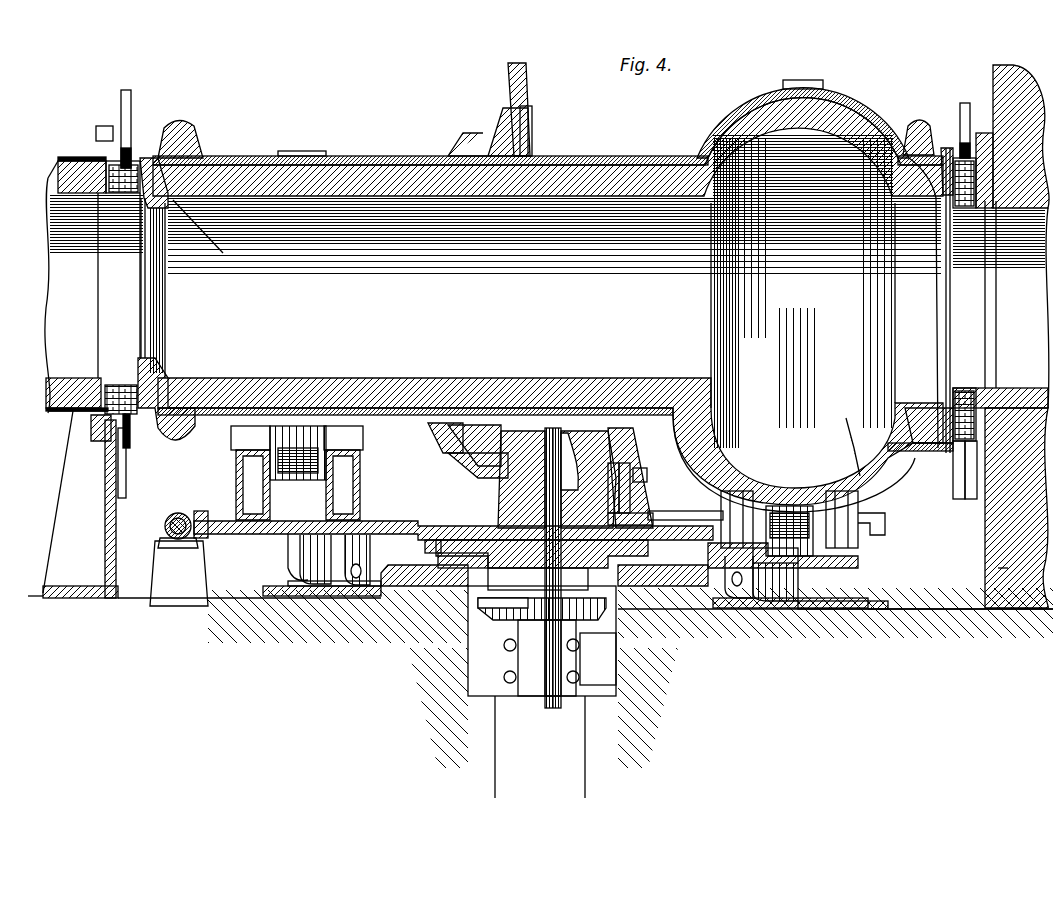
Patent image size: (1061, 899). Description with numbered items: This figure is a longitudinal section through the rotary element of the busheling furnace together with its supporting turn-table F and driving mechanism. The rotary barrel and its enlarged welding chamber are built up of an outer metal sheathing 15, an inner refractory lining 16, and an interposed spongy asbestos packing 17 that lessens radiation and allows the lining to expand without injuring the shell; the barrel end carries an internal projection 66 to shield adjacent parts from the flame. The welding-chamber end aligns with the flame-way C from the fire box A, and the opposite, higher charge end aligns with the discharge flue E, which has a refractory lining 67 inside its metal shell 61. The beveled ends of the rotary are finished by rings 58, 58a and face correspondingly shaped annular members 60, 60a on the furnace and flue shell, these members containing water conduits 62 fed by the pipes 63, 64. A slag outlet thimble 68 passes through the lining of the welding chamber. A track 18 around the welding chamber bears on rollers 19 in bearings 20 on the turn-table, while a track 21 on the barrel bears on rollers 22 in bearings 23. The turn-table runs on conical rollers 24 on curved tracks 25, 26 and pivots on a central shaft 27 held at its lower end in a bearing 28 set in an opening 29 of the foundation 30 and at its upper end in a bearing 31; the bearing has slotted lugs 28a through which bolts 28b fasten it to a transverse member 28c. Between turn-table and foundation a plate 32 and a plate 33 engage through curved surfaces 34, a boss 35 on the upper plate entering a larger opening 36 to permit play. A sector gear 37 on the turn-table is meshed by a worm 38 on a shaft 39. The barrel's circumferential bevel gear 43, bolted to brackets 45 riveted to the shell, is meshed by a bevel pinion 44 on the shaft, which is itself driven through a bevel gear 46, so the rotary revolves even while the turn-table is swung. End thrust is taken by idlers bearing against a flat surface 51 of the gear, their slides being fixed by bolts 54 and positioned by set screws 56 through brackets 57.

The outer metal sheathing 15 is at (600, 152).
The inner lining 16 is at (640, 180).
The packing or filler 17 is at (380, 155).
The track 18 is at (797, 72).
The rollers 19 is at (780, 590).
The bearings 20 is at (713, 497).
The track 21 is at (300, 143).
The rollers 22 is at (292, 465).
The bearings 23 is at (225, 470).
The conical rollers 24 is at (312, 588).
The curved track 25 is at (218, 600).
The curved track 26 is at (820, 601).
The central shaft 27 is at (600, 578).
The bearing 28 is at (510, 636).
The slotted lugs 28a is at (496, 645).
The bolts 28b is at (572, 638).
The transverse member 28c is at (600, 680).
The opening 29 is at (462, 622).
The foundation 30 is at (870, 605).
The bearing 31 is at (520, 455).
The plate 32 is at (445, 455).
The plate 33 is at (450, 574).
The curved surfaces 34 is at (540, 468).
The boss 35 is at (475, 595).
The opening 36 is at (542, 641).
The sector gear 37 is at (192, 503).
The worm 38 is at (165, 506).
The shaft 39 is at (157, 519).
The circumferential bevel gear 43 is at (520, 90).
The bevel pinion 44 is at (639, 463).
The brackets 45 is at (480, 118).
The bevel gear 46 is at (480, 600).
The flat surface 51 is at (523, 128).
The bolts 54 is at (186, 132).
The set screws 56 is at (628, 474).
The brackets 57 is at (612, 460).
The ring 58 is at (940, 140).
The ring 58a is at (147, 150).
The annular member 60 is at (990, 160).
The annular member 60a is at (90, 125).
The metal shell 61 is at (65, 150).
The water conduits 62 is at (965, 418).
The pipe 63 is at (122, 100).
The pipe 64 is at (112, 452).
The internal projection 66 is at (206, 237).
The lining 67 is at (52, 386).
The thimble 68 is at (860, 468).
The fire box A is at (1020, 570).
The flame-way C is at (1016, 290).
The discharge flue E is at (52, 232).
The turn-table F is at (282, 535).